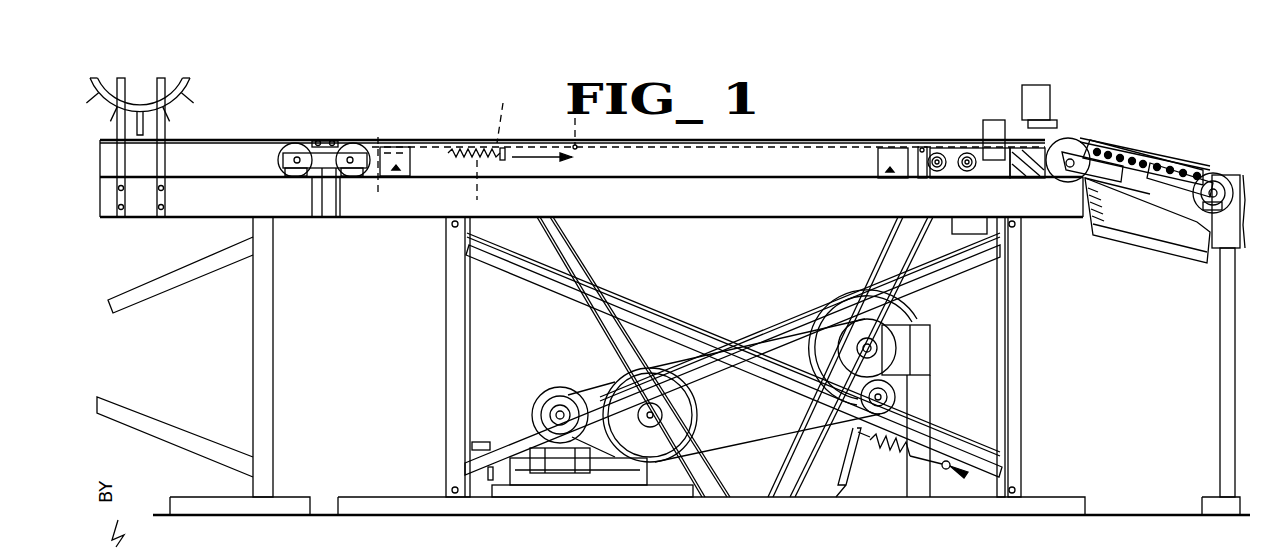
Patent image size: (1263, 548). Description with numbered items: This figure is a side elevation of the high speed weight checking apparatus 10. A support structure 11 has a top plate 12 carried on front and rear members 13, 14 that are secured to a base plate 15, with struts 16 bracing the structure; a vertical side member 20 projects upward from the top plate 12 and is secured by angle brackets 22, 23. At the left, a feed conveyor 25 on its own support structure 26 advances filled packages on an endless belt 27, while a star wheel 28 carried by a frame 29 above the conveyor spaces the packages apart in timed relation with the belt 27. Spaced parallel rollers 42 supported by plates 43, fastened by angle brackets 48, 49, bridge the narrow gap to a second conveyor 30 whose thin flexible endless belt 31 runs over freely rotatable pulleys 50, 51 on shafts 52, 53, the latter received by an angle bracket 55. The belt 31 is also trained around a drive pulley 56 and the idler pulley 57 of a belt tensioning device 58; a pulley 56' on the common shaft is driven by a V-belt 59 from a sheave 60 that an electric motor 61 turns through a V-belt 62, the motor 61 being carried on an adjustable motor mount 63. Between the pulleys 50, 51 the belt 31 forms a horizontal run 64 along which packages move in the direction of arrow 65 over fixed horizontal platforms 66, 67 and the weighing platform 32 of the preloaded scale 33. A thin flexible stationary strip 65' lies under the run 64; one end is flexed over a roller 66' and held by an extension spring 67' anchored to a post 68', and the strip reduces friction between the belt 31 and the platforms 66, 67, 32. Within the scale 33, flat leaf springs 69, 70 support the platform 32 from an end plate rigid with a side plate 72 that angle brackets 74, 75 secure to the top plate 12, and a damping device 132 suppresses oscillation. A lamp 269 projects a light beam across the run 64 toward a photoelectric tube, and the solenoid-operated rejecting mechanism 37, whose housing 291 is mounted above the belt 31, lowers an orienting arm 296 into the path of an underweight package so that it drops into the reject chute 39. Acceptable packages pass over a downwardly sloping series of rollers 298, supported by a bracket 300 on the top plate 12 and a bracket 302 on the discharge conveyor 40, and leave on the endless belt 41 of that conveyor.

The high speed weight checking apparatus 10 is at (842, 132).
The support structure 11 is at (1022, 342).
The top plate 12 is at (700, 203).
The front member 13 is at (444, 340).
The rear member 14 is at (1012, 388).
The base plate 15 is at (372, 497).
The struts 16 is at (612, 328).
The vertical side member 20 is at (636, 169).
The angle brackets 22 is at (405, 170).
The angle brackets 23 is at (880, 160).
The feed conveyor 25 is at (220, 138).
The support structure 26 is at (250, 320).
The endless belt 27 is at (186, 143).
The star wheel 28 is at (192, 85).
The frame 29 is at (165, 192).
The second conveyor 30 is at (630, 142).
The endless belt 31 is at (512, 142).
The weighing platform 32 is at (967, 150).
The scale 33 is at (938, 150).
The solenoid-operated rejecting mechanism 37 is at (1052, 98).
The reject chute 39 is at (1168, 255).
The discharge conveyor 40 is at (1240, 170).
The endless belt 41 is at (1215, 172).
The spaced parallel rollers 42 is at (333, 140).
The plates 43 is at (326, 170).
The angle bracket 48 is at (357, 145).
The angle bracket 49 is at (290, 145).
The pulley 50 is at (372, 142).
The pulley 51 is at (1030, 178).
The shaft 52 is at (365, 185).
The shaft 53 is at (1070, 167).
The angle bracket 55 is at (1100, 145).
The drive pulley 56 is at (898, 393).
The pulley 56' is at (848, 340).
The idler pulley 57 is at (897, 400).
The belt tensioning device 58 is at (850, 450).
The V-belt 59 is at (792, 323).
The sheave 60 is at (665, 449).
The electric motor 61 is at (536, 407).
The V-belt 62 is at (600, 381).
The adjustable motor mount 63 is at (565, 478).
The horizontal run 64 is at (780, 140).
The arrow 65 is at (480, 172).
The thin flexible stationary strip 65' is at (454, 128).
The fixed horizontal platform 66 is at (588, 128).
The roller 66' is at (395, 176).
The fixed horizontal platform 67 is at (1065, 128).
The extension spring 67' is at (491, 188).
The post 68' is at (516, 113).
The flat leaf spring 69 is at (1000, 160).
The flat leaf spring 70 is at (990, 163).
The side plate 72 is at (950, 172).
The angle bracket 74 is at (921, 145).
The angle bracket 75 is at (1000, 148).
The damping device 132 is at (950, 224).
The lamp 269 is at (975, 170).
The housing 291 is at (1045, 108).
The orienting arm 296 is at (1080, 150).
The series of rollers 298 is at (1185, 142).
The bracket 300 is at (1105, 180).
The bracket 302 is at (1172, 196).